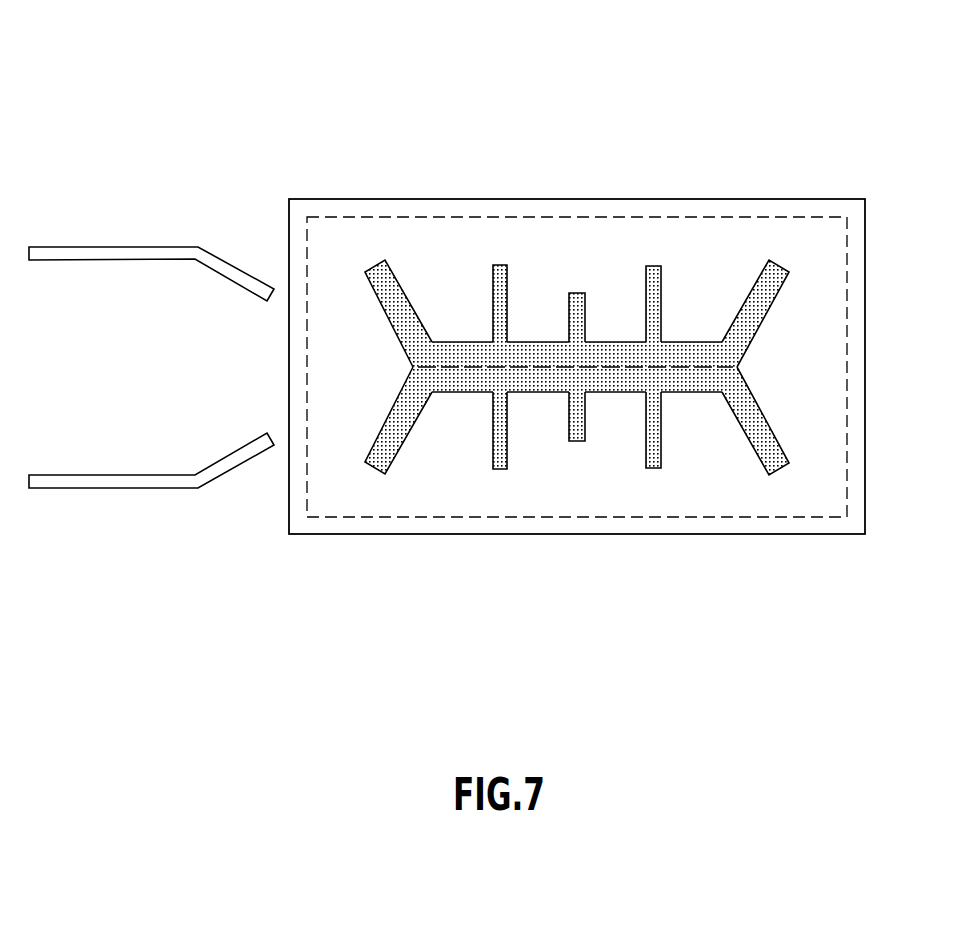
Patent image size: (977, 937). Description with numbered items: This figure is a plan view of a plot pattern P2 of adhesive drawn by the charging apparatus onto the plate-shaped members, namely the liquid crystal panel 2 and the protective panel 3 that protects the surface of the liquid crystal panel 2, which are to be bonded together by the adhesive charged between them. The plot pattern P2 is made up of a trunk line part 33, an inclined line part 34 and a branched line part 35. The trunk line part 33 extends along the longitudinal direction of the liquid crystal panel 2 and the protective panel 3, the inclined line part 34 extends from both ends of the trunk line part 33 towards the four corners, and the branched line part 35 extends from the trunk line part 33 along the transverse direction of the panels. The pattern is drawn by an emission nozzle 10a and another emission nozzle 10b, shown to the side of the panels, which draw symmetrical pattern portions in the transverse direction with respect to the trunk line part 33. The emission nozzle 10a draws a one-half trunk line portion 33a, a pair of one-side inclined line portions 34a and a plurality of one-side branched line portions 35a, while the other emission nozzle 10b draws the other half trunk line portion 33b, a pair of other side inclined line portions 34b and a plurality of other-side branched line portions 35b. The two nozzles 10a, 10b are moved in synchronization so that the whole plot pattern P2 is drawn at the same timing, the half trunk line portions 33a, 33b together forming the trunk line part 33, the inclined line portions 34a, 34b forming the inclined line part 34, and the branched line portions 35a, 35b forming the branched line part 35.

The liquid crystal panel 2 is at (847, 262).
The protective panel 3 is at (865, 370).
The emission nozzle 10a is at (144, 255).
The other emission nozzle 10b is at (143, 480).
The plot pattern P2 is at (614, 128).
The trunk line part 33 is at (575, 369).
The one-half trunk line portion 33a is at (538, 357).
The other half trunk line portion 33b is at (690, 375).
The inclined line part 34 is at (654, 368).
The one-side inclined line portion 34a is at (398, 300).
The other side inclined line portion 34b is at (393, 430).
The branched line part 35 is at (586, 387).
The one-side branched line portion 35a is at (503, 280).
The other-side branched line portion 35b is at (497, 457).